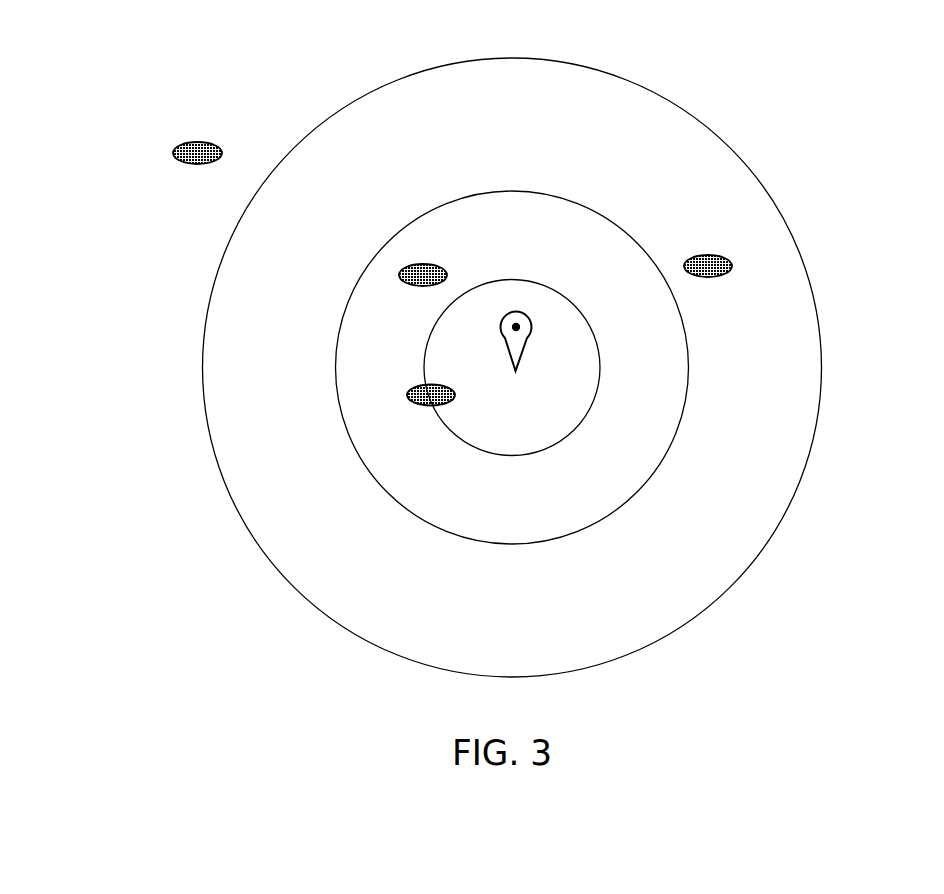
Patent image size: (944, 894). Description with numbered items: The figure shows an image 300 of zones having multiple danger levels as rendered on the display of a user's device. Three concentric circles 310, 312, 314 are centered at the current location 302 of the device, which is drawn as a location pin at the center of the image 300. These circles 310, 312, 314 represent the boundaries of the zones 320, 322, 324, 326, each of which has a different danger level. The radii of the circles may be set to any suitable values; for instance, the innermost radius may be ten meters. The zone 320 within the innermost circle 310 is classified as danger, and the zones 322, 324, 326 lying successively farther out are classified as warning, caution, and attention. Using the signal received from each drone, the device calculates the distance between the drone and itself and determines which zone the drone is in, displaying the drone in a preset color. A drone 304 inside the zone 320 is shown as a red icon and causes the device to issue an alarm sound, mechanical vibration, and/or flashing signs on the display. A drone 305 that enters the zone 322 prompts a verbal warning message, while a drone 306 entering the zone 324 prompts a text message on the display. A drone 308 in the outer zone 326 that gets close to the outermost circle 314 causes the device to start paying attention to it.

The image 300 is at (78, 33).
The current location 302 is at (524, 314).
The drone 304 is at (455, 395).
The drone 305 is at (436, 264).
The drone 306 is at (720, 255).
The drone 308 is at (207, 142).
The circle 310 is at (573, 428).
The circle 312 is at (670, 443).
The circle 314 is at (777, 525).
The zone 320 is at (575, 398).
The zone 322 is at (660, 361).
The zone 324 is at (763, 345).
The zone 326 is at (858, 233).